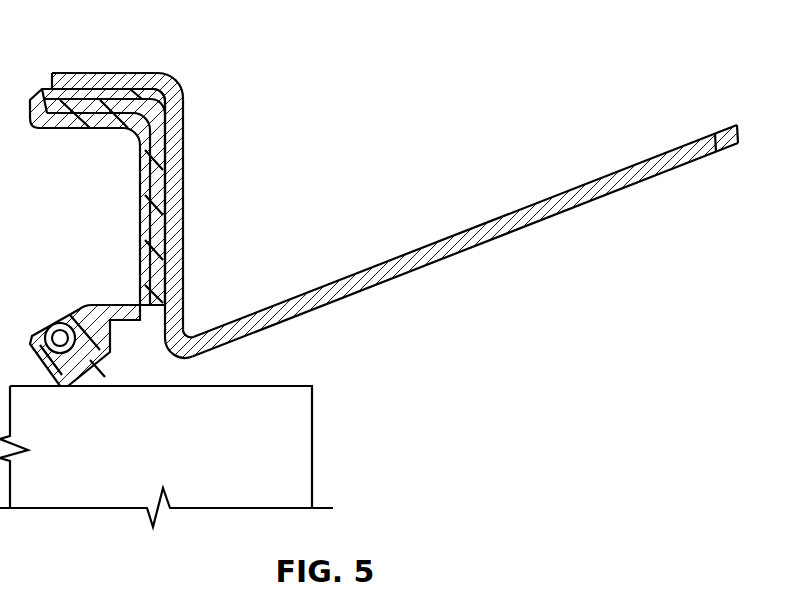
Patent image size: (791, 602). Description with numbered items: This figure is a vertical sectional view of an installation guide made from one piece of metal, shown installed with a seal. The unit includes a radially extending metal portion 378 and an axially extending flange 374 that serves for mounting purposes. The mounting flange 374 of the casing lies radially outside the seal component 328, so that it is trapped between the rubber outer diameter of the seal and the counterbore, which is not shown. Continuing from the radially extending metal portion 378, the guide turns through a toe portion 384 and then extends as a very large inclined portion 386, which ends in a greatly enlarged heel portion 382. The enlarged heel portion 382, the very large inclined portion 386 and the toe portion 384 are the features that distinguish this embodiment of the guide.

The seal component 328 is at (85, 103).
The axially extending flange 374 is at (92, 78).
The radially extending metal portion 378 is at (173, 233).
The toe portion 384 is at (188, 344).
The inclined portion 386 is at (527, 220).
The heel portion 382 is at (725, 140).